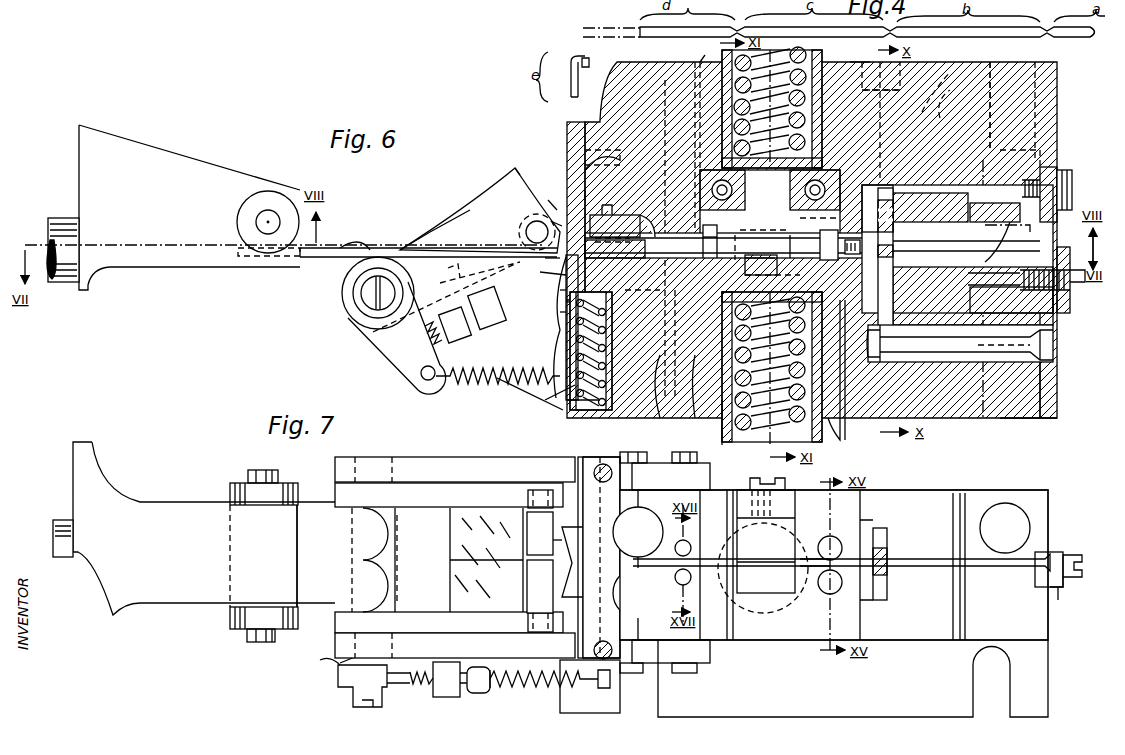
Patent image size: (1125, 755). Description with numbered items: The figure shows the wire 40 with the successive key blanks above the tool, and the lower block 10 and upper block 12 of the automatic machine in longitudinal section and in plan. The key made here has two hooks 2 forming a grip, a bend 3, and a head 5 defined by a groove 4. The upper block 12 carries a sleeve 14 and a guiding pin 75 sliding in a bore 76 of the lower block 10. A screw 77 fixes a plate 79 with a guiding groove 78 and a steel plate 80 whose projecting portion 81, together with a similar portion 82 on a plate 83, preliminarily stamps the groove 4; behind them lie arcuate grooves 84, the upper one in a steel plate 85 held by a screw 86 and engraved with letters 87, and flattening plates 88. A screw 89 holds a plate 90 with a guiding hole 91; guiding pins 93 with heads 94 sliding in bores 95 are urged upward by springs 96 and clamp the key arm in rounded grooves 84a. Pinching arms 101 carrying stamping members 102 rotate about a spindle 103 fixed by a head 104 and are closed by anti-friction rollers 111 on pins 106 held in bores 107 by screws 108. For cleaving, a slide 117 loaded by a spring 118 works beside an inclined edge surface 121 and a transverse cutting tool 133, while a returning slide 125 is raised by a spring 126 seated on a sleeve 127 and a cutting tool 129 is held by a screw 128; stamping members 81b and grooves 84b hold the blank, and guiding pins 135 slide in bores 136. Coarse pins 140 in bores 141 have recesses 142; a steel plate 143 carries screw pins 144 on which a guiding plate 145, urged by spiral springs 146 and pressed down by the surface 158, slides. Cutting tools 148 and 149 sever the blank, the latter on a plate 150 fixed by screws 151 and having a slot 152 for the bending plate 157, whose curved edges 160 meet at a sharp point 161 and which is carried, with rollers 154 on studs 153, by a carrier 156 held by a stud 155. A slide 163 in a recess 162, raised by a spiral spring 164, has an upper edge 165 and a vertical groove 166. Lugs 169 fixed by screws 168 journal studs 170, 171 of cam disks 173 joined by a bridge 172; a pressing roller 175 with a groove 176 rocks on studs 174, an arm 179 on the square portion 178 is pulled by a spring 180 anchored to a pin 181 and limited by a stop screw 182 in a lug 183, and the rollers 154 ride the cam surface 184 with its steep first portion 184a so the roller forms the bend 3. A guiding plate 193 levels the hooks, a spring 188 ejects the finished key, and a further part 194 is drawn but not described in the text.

In FIG. 4, the hooks 2 is at (645, 33).
In FIG. 4, the bend 3 is at (548, 72).
In FIG. 4, the groove 4 is at (580, 52).
In FIG. 4, the head 5 is at (589, 63).
In FIG. 4, the lower block 10 is at (1057, 412).
In FIG. 4, the upper block 12 is at (1057, 88).
In FIG. 4, the sleeve 14 is at (860, 62).
In FIG. 4, the wire 40 is at (1092, 38).
In FIG. 4, the guiding pin 75 is at (1030, 240).
In FIG. 4, the bore 76 is at (1052, 385).
In FIG. 7, the bore 76 is at (1005, 503).
In FIG. 4, the screw 77 is at (1072, 300).
In FIG. 7, the screw 77 is at (1066, 587).
In FIG. 4, the guiding groove 78 is at (1070, 260).
In FIG. 7, the guiding groove 78 is at (1070, 555).
In FIG. 4, the plate 79 is at (1060, 313).
In FIG. 7, the plate 79 is at (1058, 600).
In FIG. 4, the steel plate 80 is at (1053, 340).
In FIG. 7, the steel plate 80 is at (1045, 552).
In FIG. 4, the projecting portion 81 is at (1019, 269).
In FIG. 7, the projecting portion 81 is at (1042, 580).
In FIG. 4, the stamping members 81b is at (721, 247).
In FIG. 4, the projecting portion 82 is at (1057, 220).
In FIG. 4, the plate 83 is at (1050, 185).
In FIG. 4, the grooves 84 is at (975, 262).
In FIG. 7, the grooves 84 is at (1010, 570).
In FIG. 4, the rounded grooves 84a is at (820, 225).
In FIG. 7, the rounded grooves 84a is at (812, 545).
In FIG. 4, the rounded grooves 84b is at (719, 230).
In FIG. 7, the rounded grooves 84b is at (710, 558).
In FIG. 4, the steel plate 85 is at (966, 247).
In FIG. 4, the screw 86 is at (1072, 178).
In FIG. 4, the letters 87 is at (1000, 222).
In FIG. 4, the flattening plates 88 is at (930, 267).
In FIG. 7, the flattening plates 88 is at (923, 625).
In FIG. 4, the screw 89 is at (854, 249).
In FIG. 4, the plate 90 is at (870, 211).
In FIG. 7, the plate 90 is at (845, 570).
In FIG. 4, the guiding hole 91 is at (893, 235).
In FIG. 7, the guiding hole 91 is at (872, 528).
In FIG. 4, the guiding pins 93 is at (823, 245).
In FIG. 7, the guiding pins 93 is at (835, 538).
In FIG. 4, the head 94 is at (800, 270).
In FIG. 4, the bore 95 is at (854, 376).
In FIG. 4, the spring 96 is at (856, 371).
In FIG. 4, the pinching arms 101 is at (960, 340).
In FIG. 7, the pinching arms 101 is at (887, 535).
In FIG. 4, the stamping members 102 is at (893, 250).
In FIG. 7, the stamping members 102 is at (887, 556).
In FIG. 4, the spindle 103 is at (989, 332).
In FIG. 4, the head 104 is at (1053, 358).
In FIG. 4, the pins 106 is at (936, 95).
In FIG. 4, the bores 107 is at (960, 85).
In FIG. 4, the screws 108 is at (905, 75).
In FIG. 4, the anti-friction roller 111 is at (893, 222).
In FIG. 4, the slide 117 is at (751, 246).
In FIG. 4, the spring 118 is at (725, 62).
In FIG. 4, the lower edge surface 121 is at (765, 247).
In FIG. 4, the returning slide 125 is at (793, 245).
In FIG. 7, the returning slide 125 is at (770, 615).
In FIG. 4, the spring 126 is at (815, 425).
In FIG. 4, the sleeve 127 is at (722, 425).
In FIG. 7, the sleeve 127 is at (750, 612).
In FIG. 7, the screw 128 is at (750, 478).
In FIG. 7, the cutting tool 129 is at (786, 518).
In FIG. 4, the cutting tool 133 is at (763, 267).
In FIG. 4, the guiding pins 135 is at (770, 141).
In FIG. 4, the bores 136 is at (689, 394).
In FIG. 7, the bores 136 is at (680, 540).
In FIG. 4, the coarse pins 140 is at (585, 156).
In FIG. 4, the bores 141 is at (668, 394).
In FIG. 7, the bores 141 is at (625, 470).
In FIG. 4, the recesses 142 is at (620, 228).
In FIG. 4, the steel plate 143 is at (650, 342).
In FIG. 4, the screw pins 144 is at (585, 192).
In FIG. 7, the screw pins 144 is at (600, 464).
In FIG. 4, the guiding plate 145 is at (615, 218).
In FIG. 7, the guiding plate 145 is at (598, 465).
In FIG. 4, the spiral springs 146 is at (630, 244).
In FIG. 6, the cutting tool 148 is at (550, 274).
In FIG. 7, the cutting tool 148 is at (585, 580).
In FIG. 6, the cutting tool 149 is at (553, 222).
In FIG. 4, the plate 150 is at (585, 175).
In FIG. 4, the screws 151 is at (567, 135).
In FIG. 6, the slot 152 is at (548, 200).
In FIG. 6, the studs 153 is at (262, 218).
In FIG. 7, the studs 153 is at (260, 470).
In FIG. 6, the rollers 154 is at (268, 190).
In FIG. 7, the rollers 154 is at (243, 492).
In FIG. 6, the stud 155 is at (55, 215).
In FIG. 7, the stud 155 is at (60, 518).
In FIG. 6, the carrier 156 is at (157, 150).
In FIG. 7, the carrier 156 is at (143, 502).
In FIG. 6, the bending plate 157 is at (320, 258).
In FIG. 7, the bending plate 157 is at (228, 565).
In FIG. 6, the surface 158 is at (535, 165).
In FIG. 7, the curved edges 160 is at (355, 526).
In FIG. 7, the sharp point 161 is at (398, 550).
In FIG. 4, the recess 162 is at (630, 405).
In FIG. 7, the recess 162 is at (622, 497).
In FIG. 6, the slide 163 is at (566, 292).
In FIG. 7, the slide 163 is at (553, 580).
In FIG. 4, the spiral spring 164 is at (567, 400).
In FIG. 6, the spiral spring 164 is at (553, 400).
In FIG. 6, the upper edge 165 is at (548, 258).
In FIG. 6, the vertical groove 166 is at (566, 312).
In FIG. 7, the vertical groove 166 is at (553, 545).
In FIG. 7, the screws 168 is at (650, 444).
In FIG. 6, the lugs 169 is at (515, 388).
In FIG. 7, the lugs 169 is at (445, 468).
In FIG. 7, the stud 170 is at (392, 465).
In FIG. 7, the stud 171 is at (340, 665).
In FIG. 6, the bridge 172 is at (360, 258).
In FIG. 7, the bridge 172 is at (398, 520).
In FIG. 6, the cam disks 173 is at (468, 198).
In FIG. 7, the cam disks 173 is at (458, 520).
In FIG. 6, the studs 174 is at (526, 230).
In FIG. 7, the studs 174 is at (535, 490).
In FIG. 6, the pressing roller 175 is at (520, 240).
In FIG. 7, the pressing roller 175 is at (535, 525).
In FIG. 7, the groove 176 is at (560, 565).
In FIG. 6, the square portion 178 is at (372, 300).
In FIG. 6, the arm 179 is at (400, 350).
In FIG. 7, the arm 179 is at (392, 687).
In FIG. 6, the spring 180 is at (470, 382).
In FIG. 7, the spring 180 is at (492, 688).
In FIG. 7, the pin 181 is at (604, 688).
In FIG. 6, the stop screw 182 is at (462, 335).
In FIG. 7, the stop screw 182 is at (478, 693).
In FIG. 6, the lug 183 is at (488, 322).
In FIG. 7, the lug 183 is at (447, 697).
In FIG. 6, the cam surface 184 is at (440, 224).
In FIG. 6, the first portion 184a is at (405, 248).
In FIG. 6, the spring 188 is at (558, 340).
In FIG. 6, the guiding plate 193 is at (446, 297).
In FIG. 7, the guiding plate 193 is at (470, 575).
In FIG. 6, the link 194 is at (520, 264).
In FIG. 7, the link 194 is at (498, 538).